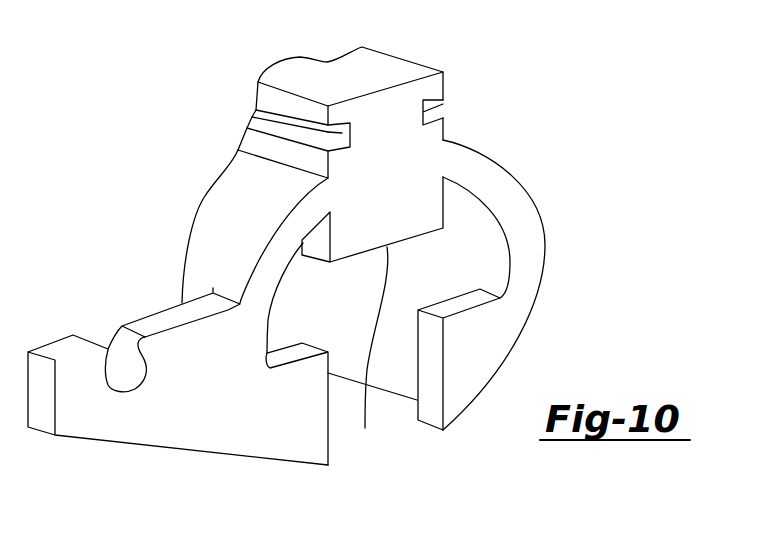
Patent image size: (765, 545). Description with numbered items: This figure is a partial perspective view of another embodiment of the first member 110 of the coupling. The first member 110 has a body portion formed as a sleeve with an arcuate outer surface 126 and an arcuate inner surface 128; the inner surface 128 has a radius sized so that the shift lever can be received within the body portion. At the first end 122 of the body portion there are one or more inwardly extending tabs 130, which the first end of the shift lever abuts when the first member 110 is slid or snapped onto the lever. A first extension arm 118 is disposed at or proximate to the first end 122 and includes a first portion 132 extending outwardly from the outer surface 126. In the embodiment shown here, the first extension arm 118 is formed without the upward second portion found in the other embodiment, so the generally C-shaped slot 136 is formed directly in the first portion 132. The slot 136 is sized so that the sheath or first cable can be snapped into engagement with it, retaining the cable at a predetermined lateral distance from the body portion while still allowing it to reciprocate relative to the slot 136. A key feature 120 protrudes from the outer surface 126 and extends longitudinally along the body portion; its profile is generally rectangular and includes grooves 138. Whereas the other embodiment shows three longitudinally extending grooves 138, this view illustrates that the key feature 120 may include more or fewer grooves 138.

The first member 110 is at (520, 176).
The first extension arm 118 is at (105, 452).
The key feature 120 is at (323, 80).
The first end 122 is at (528, 267).
The arcuate outer surface 126 is at (228, 220).
The arcuate inner surface 128 is at (460, 270).
The inwardly extending tabs 130 is at (427, 378).
The first portion 132 is at (170, 432).
The C-shaped slot 136 is at (127, 368).
The grooves 138 is at (436, 112).